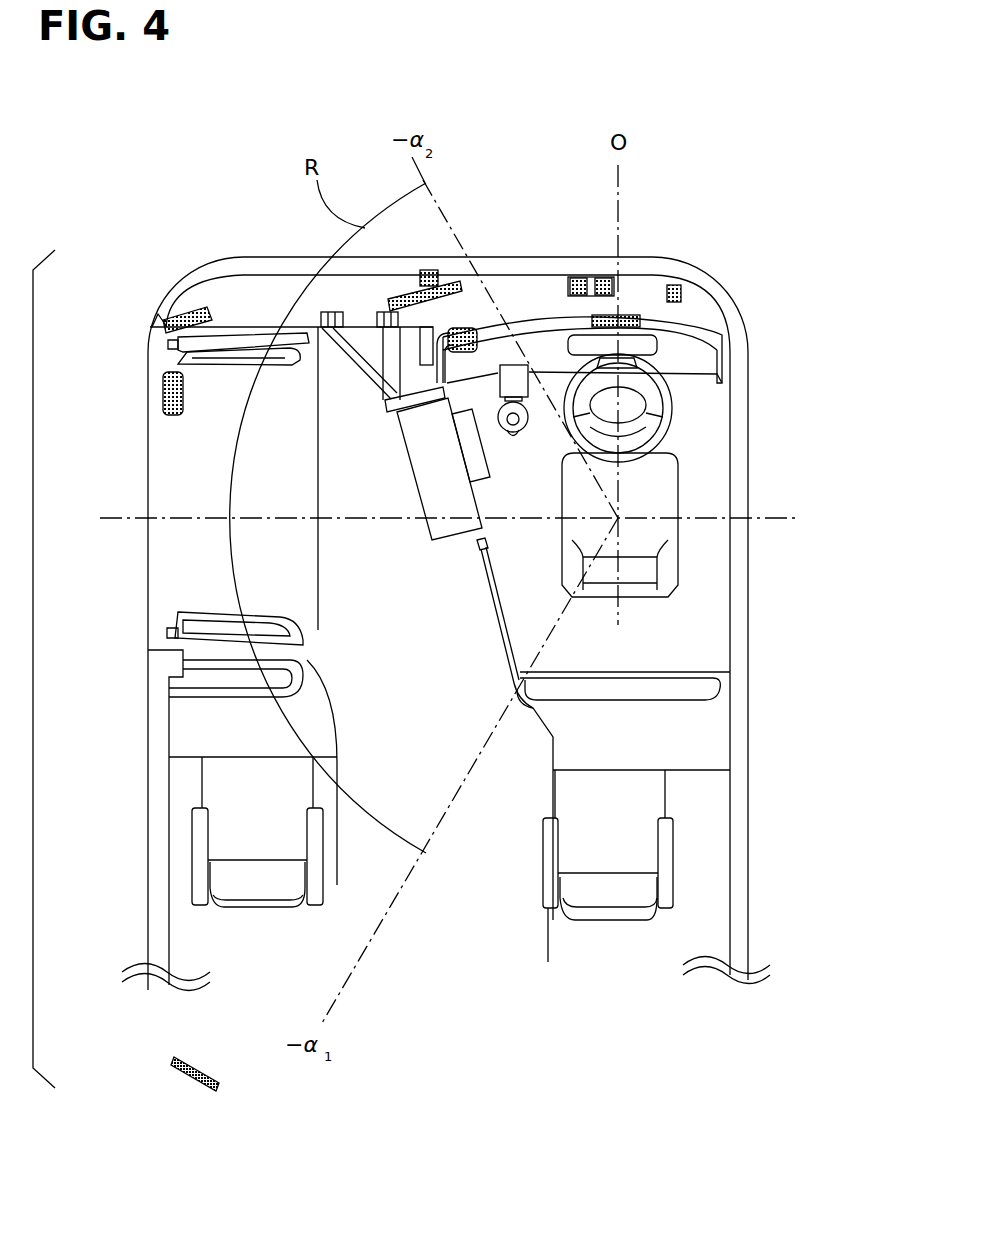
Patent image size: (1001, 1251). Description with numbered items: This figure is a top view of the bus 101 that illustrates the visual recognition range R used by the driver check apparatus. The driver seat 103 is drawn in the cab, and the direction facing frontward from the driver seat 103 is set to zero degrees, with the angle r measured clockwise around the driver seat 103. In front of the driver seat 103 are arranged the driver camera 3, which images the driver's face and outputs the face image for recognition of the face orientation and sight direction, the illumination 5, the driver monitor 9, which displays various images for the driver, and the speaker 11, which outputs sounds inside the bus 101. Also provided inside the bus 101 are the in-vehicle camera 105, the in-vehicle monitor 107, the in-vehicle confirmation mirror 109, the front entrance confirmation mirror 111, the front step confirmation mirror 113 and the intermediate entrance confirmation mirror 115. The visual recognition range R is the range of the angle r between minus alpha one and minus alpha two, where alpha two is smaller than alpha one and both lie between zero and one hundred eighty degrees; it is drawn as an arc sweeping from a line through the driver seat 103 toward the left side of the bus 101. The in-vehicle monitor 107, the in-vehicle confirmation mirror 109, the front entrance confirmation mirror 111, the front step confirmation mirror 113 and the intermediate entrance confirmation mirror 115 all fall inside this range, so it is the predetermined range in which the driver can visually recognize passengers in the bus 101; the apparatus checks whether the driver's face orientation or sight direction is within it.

The driver camera 3 is at (582, 276).
The illumination 5 is at (611, 276).
The driver monitor 9 is at (635, 316).
The speaker 11 is at (673, 287).
The bus 101 is at (745, 403).
The driver seat 103 is at (657, 493).
The in-vehicle camera 105 is at (433, 270).
The in-vehicle monitor 107 is at (472, 328).
The in-vehicle confirmation mirror 109 is at (412, 285).
The front entrance confirmation mirror 111 is at (185, 316).
The front step confirmation mirror 113 is at (162, 387).
The intermediate entrance confirmation mirror 115 is at (175, 1060).